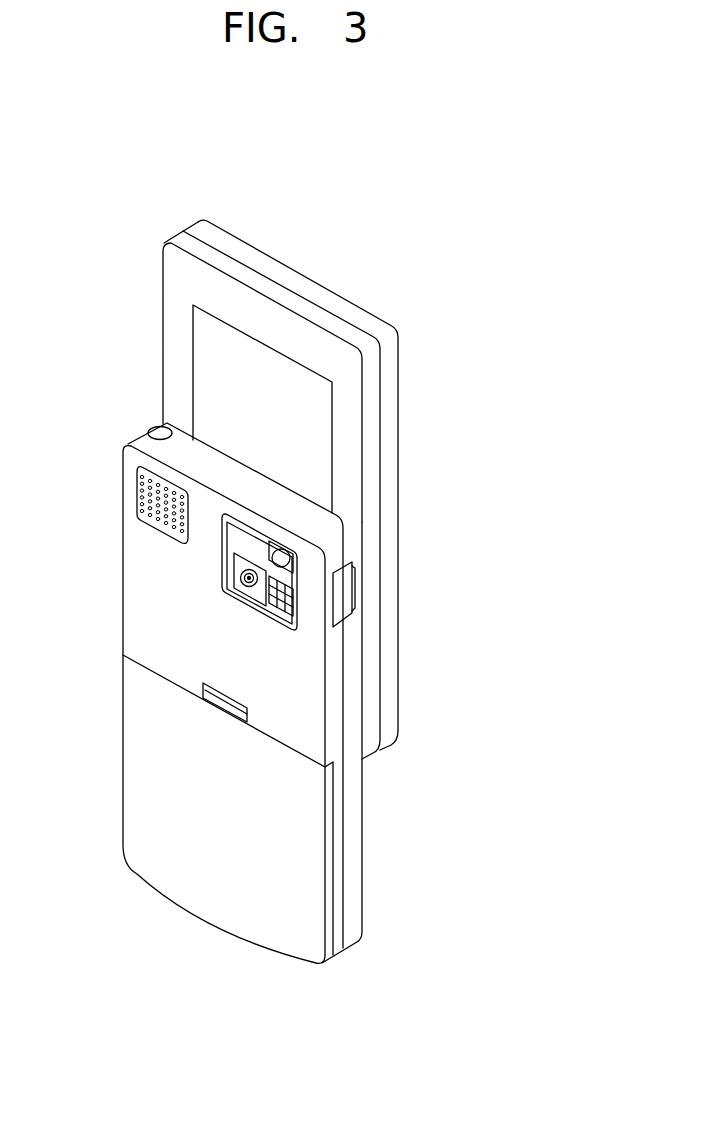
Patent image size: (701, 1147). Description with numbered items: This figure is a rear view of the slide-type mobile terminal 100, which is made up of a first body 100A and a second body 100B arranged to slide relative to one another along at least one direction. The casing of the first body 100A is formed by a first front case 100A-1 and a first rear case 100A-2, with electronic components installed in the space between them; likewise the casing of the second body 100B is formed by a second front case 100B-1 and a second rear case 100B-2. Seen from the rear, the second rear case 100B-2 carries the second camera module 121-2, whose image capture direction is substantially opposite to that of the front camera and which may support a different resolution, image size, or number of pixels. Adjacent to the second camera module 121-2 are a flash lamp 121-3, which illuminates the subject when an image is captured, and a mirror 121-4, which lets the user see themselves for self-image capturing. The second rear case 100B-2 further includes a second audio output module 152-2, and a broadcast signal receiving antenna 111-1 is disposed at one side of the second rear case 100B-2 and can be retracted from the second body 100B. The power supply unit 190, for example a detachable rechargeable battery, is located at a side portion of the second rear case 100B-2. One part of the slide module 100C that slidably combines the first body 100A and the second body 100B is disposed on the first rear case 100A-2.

The mobile terminal 100 is at (409, 267).
The first body 100A is at (135, 333).
The first front case 100A-1 is at (197, 225).
The first rear case 100A-2 is at (187, 238).
The second body 100B is at (108, 581).
The second front case 100B-1 is at (353, 780).
The second rear case 100B-2 is at (333, 732).
The slide module 100C is at (193, 392).
The broadcast signal receiving antenna 111-1 is at (150, 430).
The second camera module 121-2 is at (253, 597).
The flash lamp 121-3 is at (297, 628).
The mirror 121-4 is at (288, 561).
The second audio output module 152-2 is at (143, 498).
The power supply unit 190 is at (137, 728).